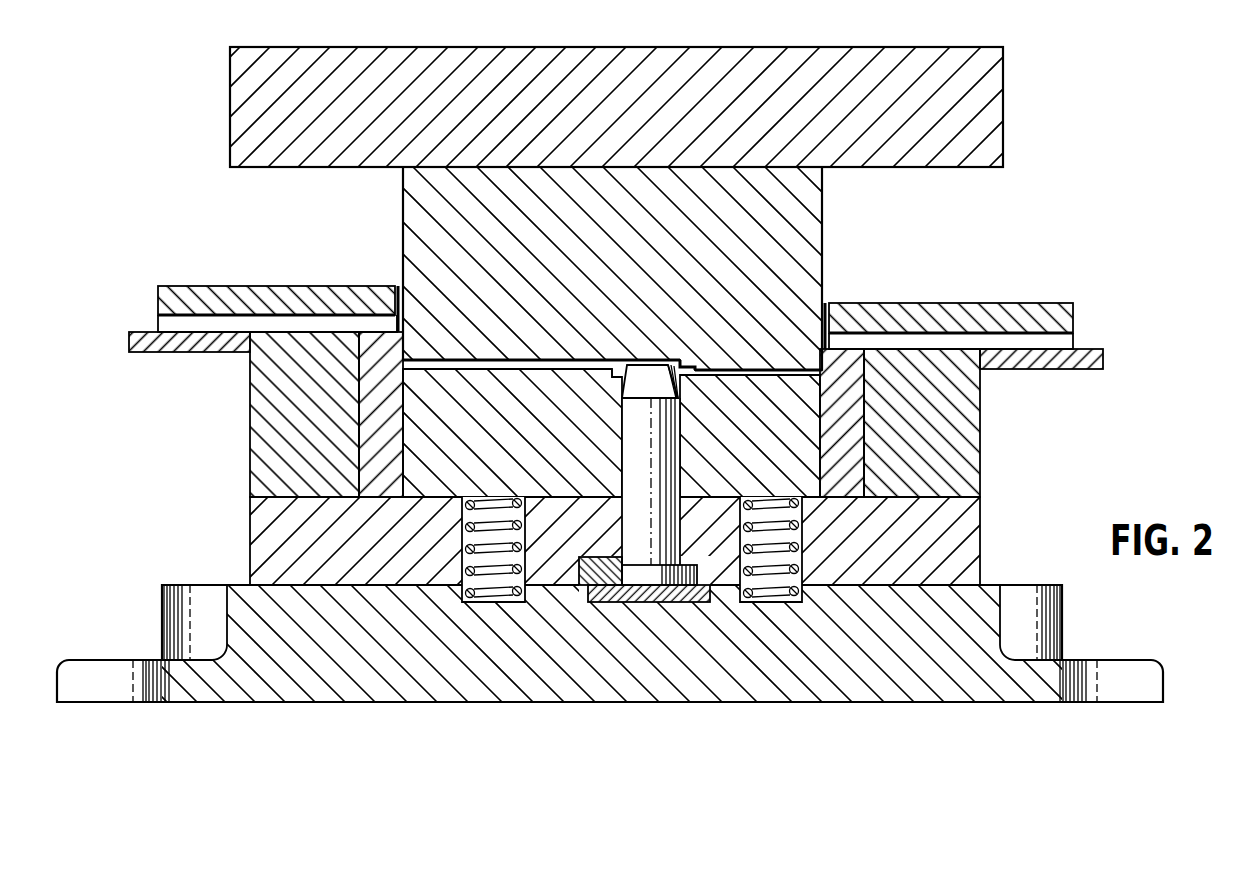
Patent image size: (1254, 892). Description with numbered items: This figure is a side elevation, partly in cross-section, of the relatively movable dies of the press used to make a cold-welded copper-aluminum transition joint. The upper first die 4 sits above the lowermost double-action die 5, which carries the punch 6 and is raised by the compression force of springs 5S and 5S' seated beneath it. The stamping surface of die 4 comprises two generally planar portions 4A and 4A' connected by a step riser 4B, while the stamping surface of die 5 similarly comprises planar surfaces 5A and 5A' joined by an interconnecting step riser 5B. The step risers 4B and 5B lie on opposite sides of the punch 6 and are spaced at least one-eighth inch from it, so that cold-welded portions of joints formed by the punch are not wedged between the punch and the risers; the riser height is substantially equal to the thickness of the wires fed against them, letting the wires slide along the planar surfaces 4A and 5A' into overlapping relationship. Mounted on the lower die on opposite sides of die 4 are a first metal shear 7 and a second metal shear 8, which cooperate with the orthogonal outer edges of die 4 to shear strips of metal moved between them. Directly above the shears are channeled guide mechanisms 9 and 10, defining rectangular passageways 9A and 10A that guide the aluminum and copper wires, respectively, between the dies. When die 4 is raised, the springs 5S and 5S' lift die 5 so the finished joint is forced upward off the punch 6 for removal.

The first die 4 is at (824, 222).
The planar portion of stamping surface 4A is at (541, 331).
The step riser 4B is at (690, 362).
The planar portion of stamping surface 4A' is at (758, 342).
The double-action die 5 is at (528, 474).
The planar surface 5A is at (507, 392).
The step riser 5B is at (620, 378).
The planar surface 5A' is at (750, 395).
The spring 5S is at (490, 621).
The spring 5S' is at (771, 621).
The punch 6 is at (657, 394).
The first metal shear 7 is at (397, 290).
The second metal shear 8 is at (827, 303).
The channeled guide mechanism 9 is at (198, 287).
The rectangular passageway 9A is at (163, 322).
The channeled guide mechanism 10 is at (1030, 303).
The rectangular passageway 10A is at (1073, 340).